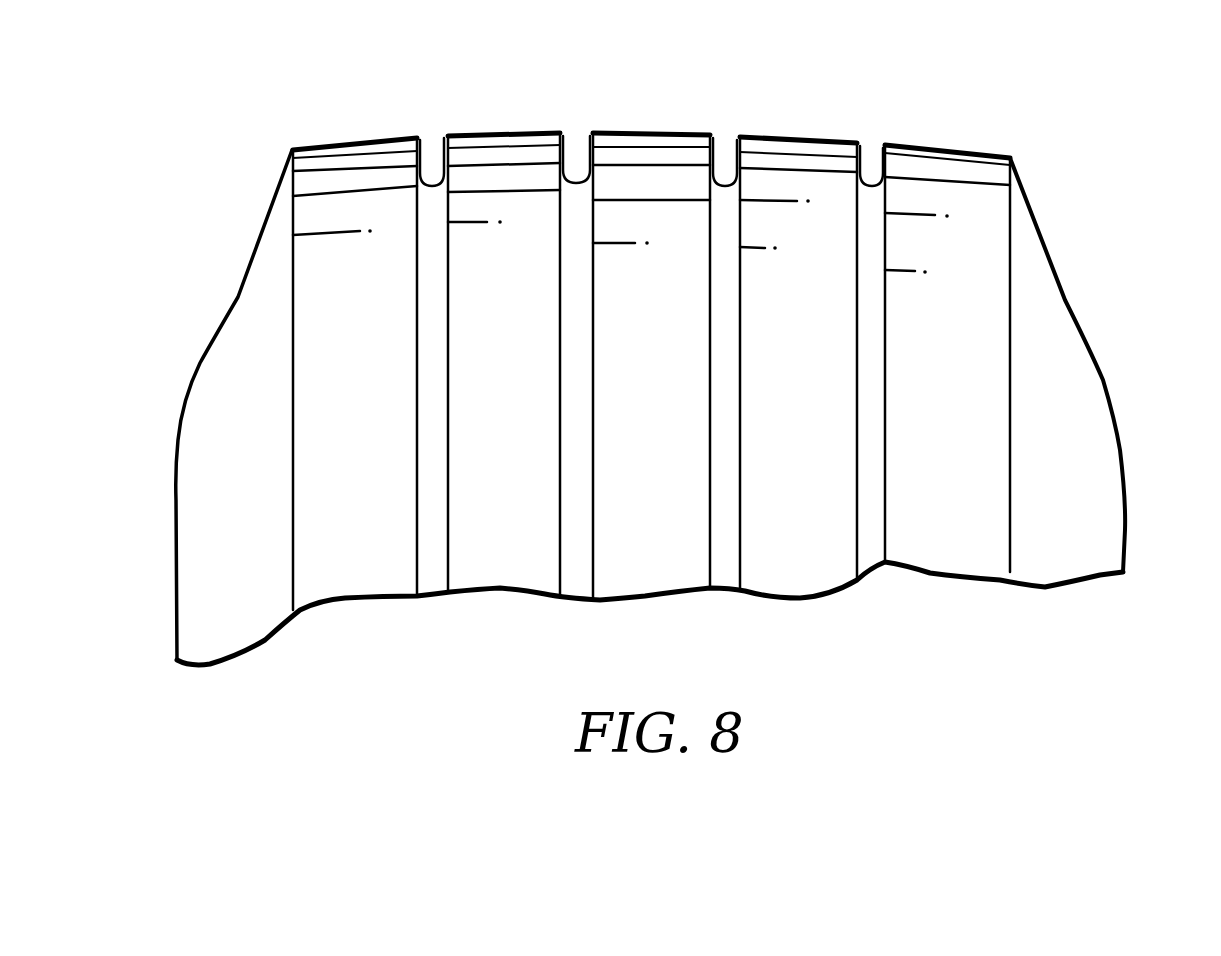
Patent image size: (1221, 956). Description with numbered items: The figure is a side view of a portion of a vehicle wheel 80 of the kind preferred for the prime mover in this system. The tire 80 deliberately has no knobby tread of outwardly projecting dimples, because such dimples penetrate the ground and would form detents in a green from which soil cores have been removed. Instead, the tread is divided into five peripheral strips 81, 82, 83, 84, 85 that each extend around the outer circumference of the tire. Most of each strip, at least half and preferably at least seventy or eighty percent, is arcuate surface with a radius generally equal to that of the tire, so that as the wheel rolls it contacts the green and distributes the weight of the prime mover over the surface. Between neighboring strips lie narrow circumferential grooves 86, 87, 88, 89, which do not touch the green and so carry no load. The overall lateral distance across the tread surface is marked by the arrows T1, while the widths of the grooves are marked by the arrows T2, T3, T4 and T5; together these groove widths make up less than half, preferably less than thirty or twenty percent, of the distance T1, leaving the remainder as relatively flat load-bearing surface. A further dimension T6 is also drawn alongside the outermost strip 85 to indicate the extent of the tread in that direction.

The vehicle wheel 80 is at (1130, 195).
The peripheral strip 81 is at (343, 585).
The peripheral strip 82 is at (518, 543).
The peripheral strip 83 is at (656, 543).
The peripheral strip 84 is at (792, 543).
The peripheral strip 85 is at (945, 562).
The groove 86 is at (430, 578).
The groove 87 is at (573, 578).
The groove 88 is at (725, 577).
The groove 89 is at (868, 547).
The lateral distance across tread surface T1 is at (1012, 138).
The groove width T2 is at (495, 297).
The groove width T3 is at (633, 295).
The groove width T4 is at (783, 297).
The groove width T5 is at (930, 307).
The tread height T6 is at (990, 530).